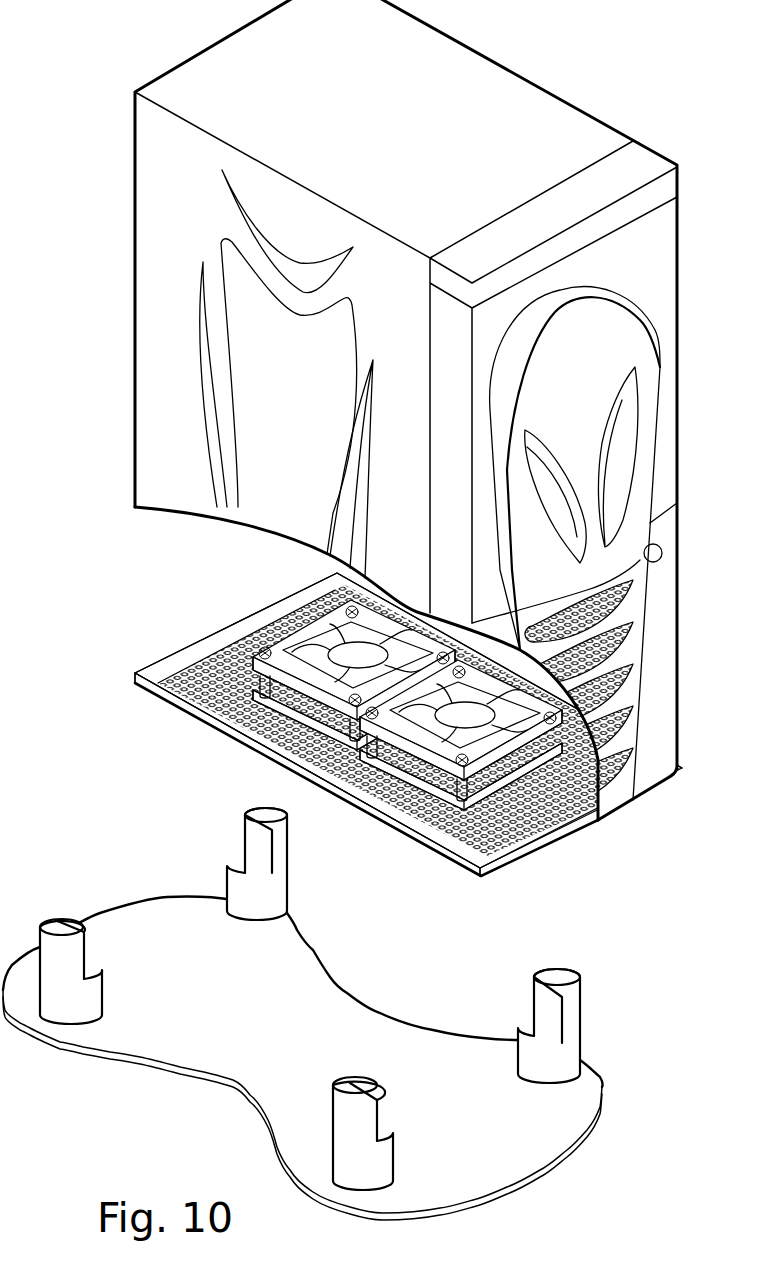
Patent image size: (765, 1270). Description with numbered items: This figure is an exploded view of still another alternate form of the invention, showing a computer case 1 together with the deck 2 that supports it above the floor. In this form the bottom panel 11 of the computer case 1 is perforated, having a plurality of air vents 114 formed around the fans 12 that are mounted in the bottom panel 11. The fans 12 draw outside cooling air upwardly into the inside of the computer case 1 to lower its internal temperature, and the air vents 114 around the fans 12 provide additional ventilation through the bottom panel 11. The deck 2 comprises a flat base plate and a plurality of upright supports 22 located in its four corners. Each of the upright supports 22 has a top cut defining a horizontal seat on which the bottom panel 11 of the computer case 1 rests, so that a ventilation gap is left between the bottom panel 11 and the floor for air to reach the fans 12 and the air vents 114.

The computer case 1 is at (571, 64).
The bottom panel 11 is at (408, 733).
The air vents 114 is at (563, 813).
The fan 12 is at (265, 663).
The deck 2 is at (616, 1040).
The upright supports 22 is at (267, 813).